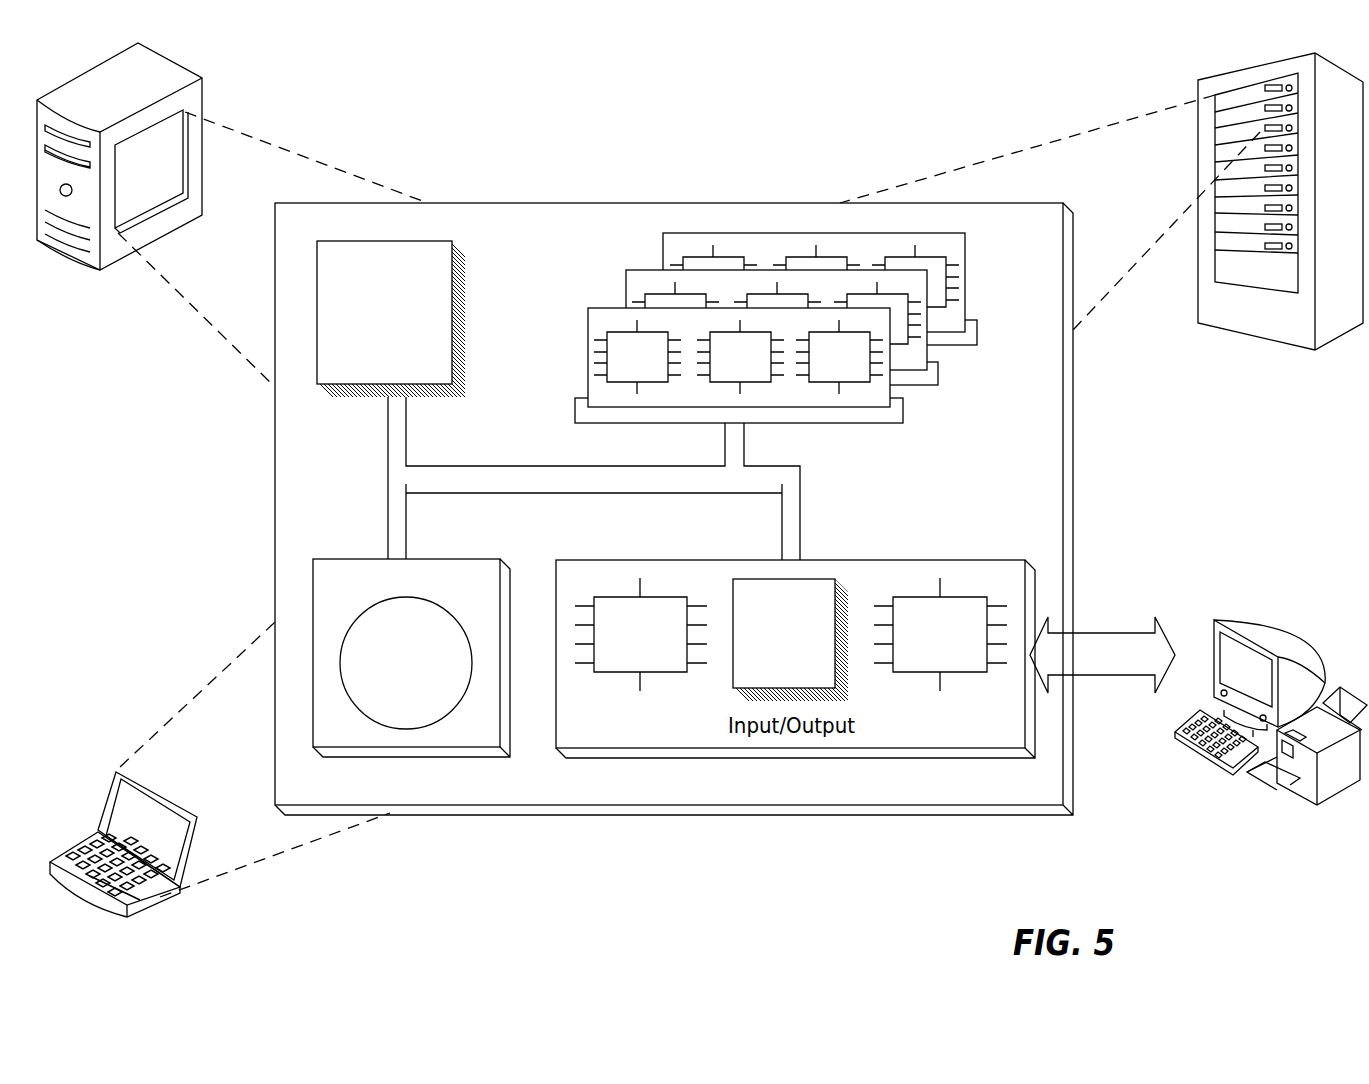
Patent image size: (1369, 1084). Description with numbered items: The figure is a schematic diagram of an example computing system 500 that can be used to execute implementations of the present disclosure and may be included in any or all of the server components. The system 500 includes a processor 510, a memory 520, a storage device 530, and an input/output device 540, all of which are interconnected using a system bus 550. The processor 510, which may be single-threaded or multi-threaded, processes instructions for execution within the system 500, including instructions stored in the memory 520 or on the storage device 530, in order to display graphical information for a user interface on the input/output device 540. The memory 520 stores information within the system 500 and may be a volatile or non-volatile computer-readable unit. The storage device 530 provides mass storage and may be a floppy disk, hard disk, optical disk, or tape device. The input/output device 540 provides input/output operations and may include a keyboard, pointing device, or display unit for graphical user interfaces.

The computing system 500 is at (482, 113).
The processor 510 is at (442, 378).
The memory 520 is at (968, 383).
The storage device 530 is at (491, 741).
The input/output device 540 is at (1214, 625).
The system bus 550 is at (590, 484).